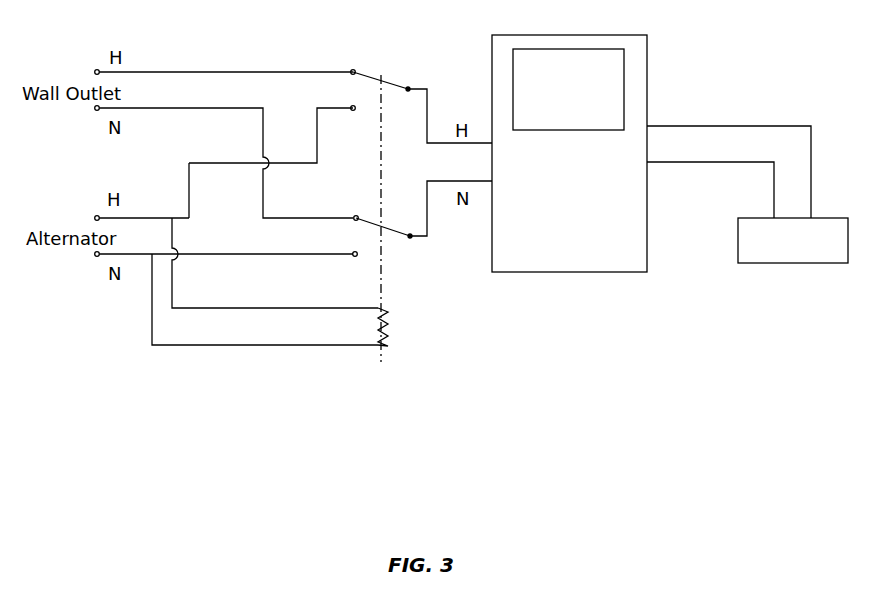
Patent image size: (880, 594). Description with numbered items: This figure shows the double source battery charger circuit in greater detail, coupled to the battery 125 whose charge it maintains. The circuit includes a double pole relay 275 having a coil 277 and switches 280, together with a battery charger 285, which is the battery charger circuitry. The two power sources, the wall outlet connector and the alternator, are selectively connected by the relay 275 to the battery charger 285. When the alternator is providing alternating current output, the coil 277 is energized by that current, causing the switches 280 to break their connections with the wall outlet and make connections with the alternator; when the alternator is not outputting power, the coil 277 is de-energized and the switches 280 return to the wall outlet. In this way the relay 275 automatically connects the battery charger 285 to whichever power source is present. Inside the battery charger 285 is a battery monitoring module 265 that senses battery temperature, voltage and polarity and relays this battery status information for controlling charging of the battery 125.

The battery 125 is at (760, 265).
The battery monitoring module 265 is at (625, 90).
The double pole relay 275 is at (381, 410).
The coil 277 is at (388, 348).
The switches 280 is at (370, 75).
The battery charger 285 is at (524, 274).